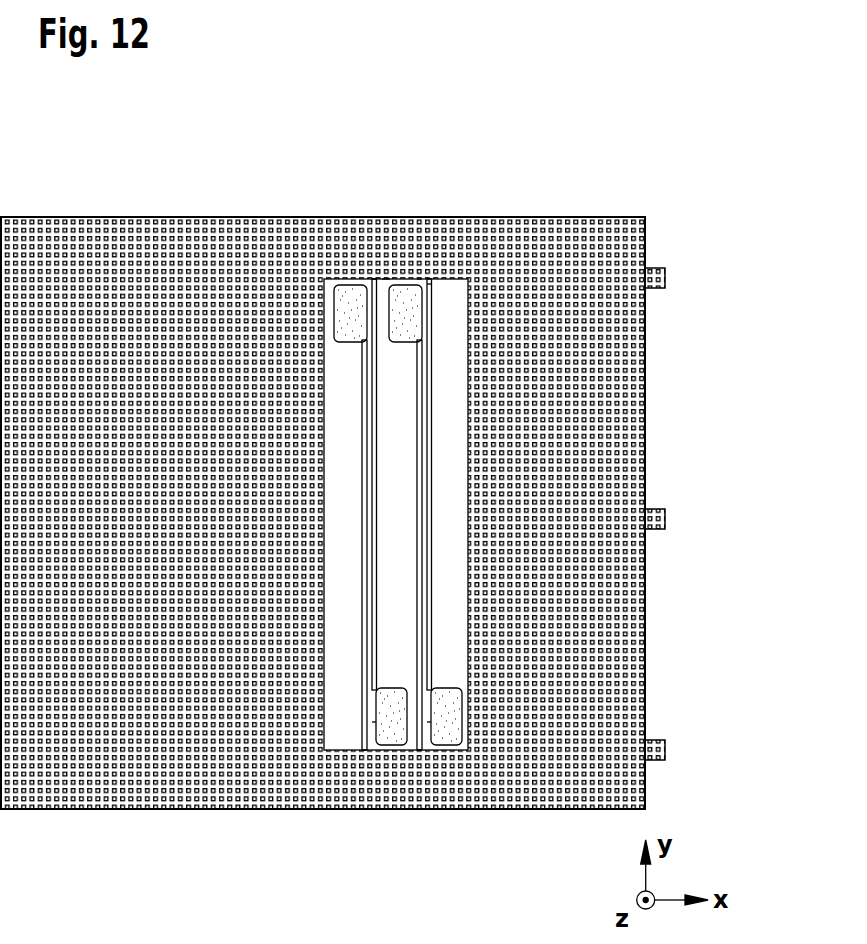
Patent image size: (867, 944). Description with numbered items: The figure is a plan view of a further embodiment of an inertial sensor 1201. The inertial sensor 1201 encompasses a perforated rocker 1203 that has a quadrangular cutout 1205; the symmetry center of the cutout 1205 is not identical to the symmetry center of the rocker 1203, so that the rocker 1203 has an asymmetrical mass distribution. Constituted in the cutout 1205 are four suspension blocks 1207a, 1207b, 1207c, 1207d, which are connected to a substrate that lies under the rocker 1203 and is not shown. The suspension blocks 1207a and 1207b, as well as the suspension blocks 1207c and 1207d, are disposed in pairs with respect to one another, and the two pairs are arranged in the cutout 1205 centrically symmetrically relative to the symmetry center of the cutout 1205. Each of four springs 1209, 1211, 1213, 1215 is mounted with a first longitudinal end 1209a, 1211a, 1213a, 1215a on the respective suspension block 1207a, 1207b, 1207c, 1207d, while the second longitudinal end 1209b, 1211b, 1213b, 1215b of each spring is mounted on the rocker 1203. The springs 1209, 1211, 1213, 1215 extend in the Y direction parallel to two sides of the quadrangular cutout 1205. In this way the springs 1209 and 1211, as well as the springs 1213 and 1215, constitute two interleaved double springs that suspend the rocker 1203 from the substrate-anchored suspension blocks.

The inertial sensor 1201 is at (697, 111).
The perforated rocker 1203 is at (600, 482).
The quadrangular cutout 1205 is at (452, 307).
The suspension block 1207a is at (347, 297).
The suspension block 1207b is at (402, 296).
The suspension block 1207c is at (450, 728).
The suspension block 1207d is at (385, 700).
The spring 1209 is at (332, 494).
The first longitudinal end 1209a is at (374, 280).
The second longitudinal end 1209b is at (365, 748).
The spring 1211 is at (305, 516).
The first longitudinal end 1211a is at (373, 723).
The second longitudinal end 1211b is at (386, 279).
The spring 1213 is at (566, 494).
The first longitudinal end 1213a is at (423, 281).
The second longitudinal end 1213b is at (420, 748).
The spring 1215 is at (535, 539).
The first longitudinal end 1215a is at (430, 722).
The second longitudinal end 1215b is at (433, 284).